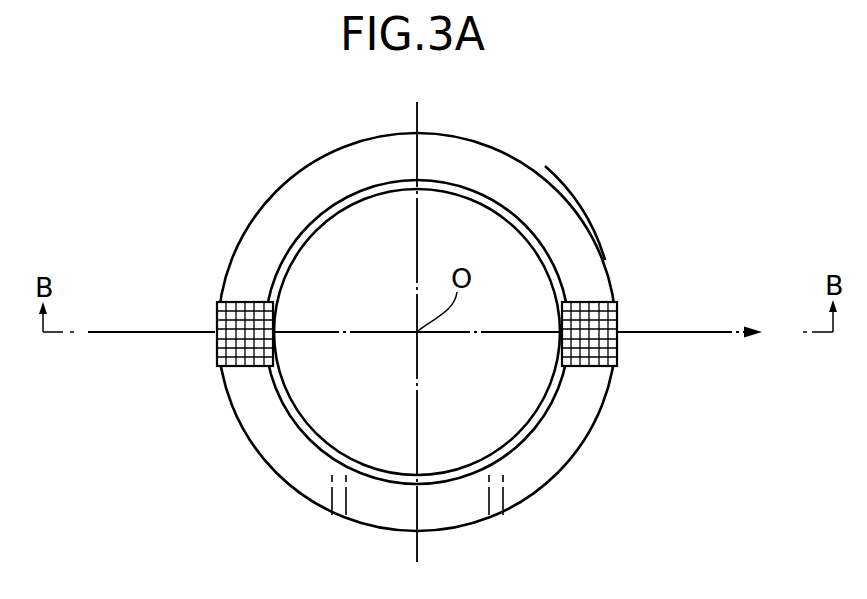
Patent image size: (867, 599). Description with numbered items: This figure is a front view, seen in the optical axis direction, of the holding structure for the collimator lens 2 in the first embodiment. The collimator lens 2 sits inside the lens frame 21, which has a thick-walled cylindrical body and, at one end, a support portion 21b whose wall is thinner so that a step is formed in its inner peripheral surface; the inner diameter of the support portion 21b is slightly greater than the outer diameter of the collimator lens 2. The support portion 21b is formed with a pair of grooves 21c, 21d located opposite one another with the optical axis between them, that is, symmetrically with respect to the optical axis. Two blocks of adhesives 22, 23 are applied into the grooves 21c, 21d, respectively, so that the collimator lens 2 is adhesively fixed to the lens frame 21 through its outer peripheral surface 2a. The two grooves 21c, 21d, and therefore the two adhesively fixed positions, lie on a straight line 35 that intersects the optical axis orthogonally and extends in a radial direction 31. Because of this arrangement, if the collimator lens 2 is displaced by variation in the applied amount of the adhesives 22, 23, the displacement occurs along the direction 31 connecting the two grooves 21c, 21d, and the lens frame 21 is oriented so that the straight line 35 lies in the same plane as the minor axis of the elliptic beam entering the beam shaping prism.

The collimator lens 2 is at (368, 285).
The outer peripheral surface 2a is at (512, 442).
The lens frame 21 is at (542, 198).
The support portion 21b is at (575, 245).
The groove 21c is at (592, 306).
The groove 21d is at (248, 307).
The adhesive 22 is at (593, 354).
The adhesive 23 is at (245, 355).
The radial direction 31 is at (427, 332).
The straight line 35 is at (157, 331).